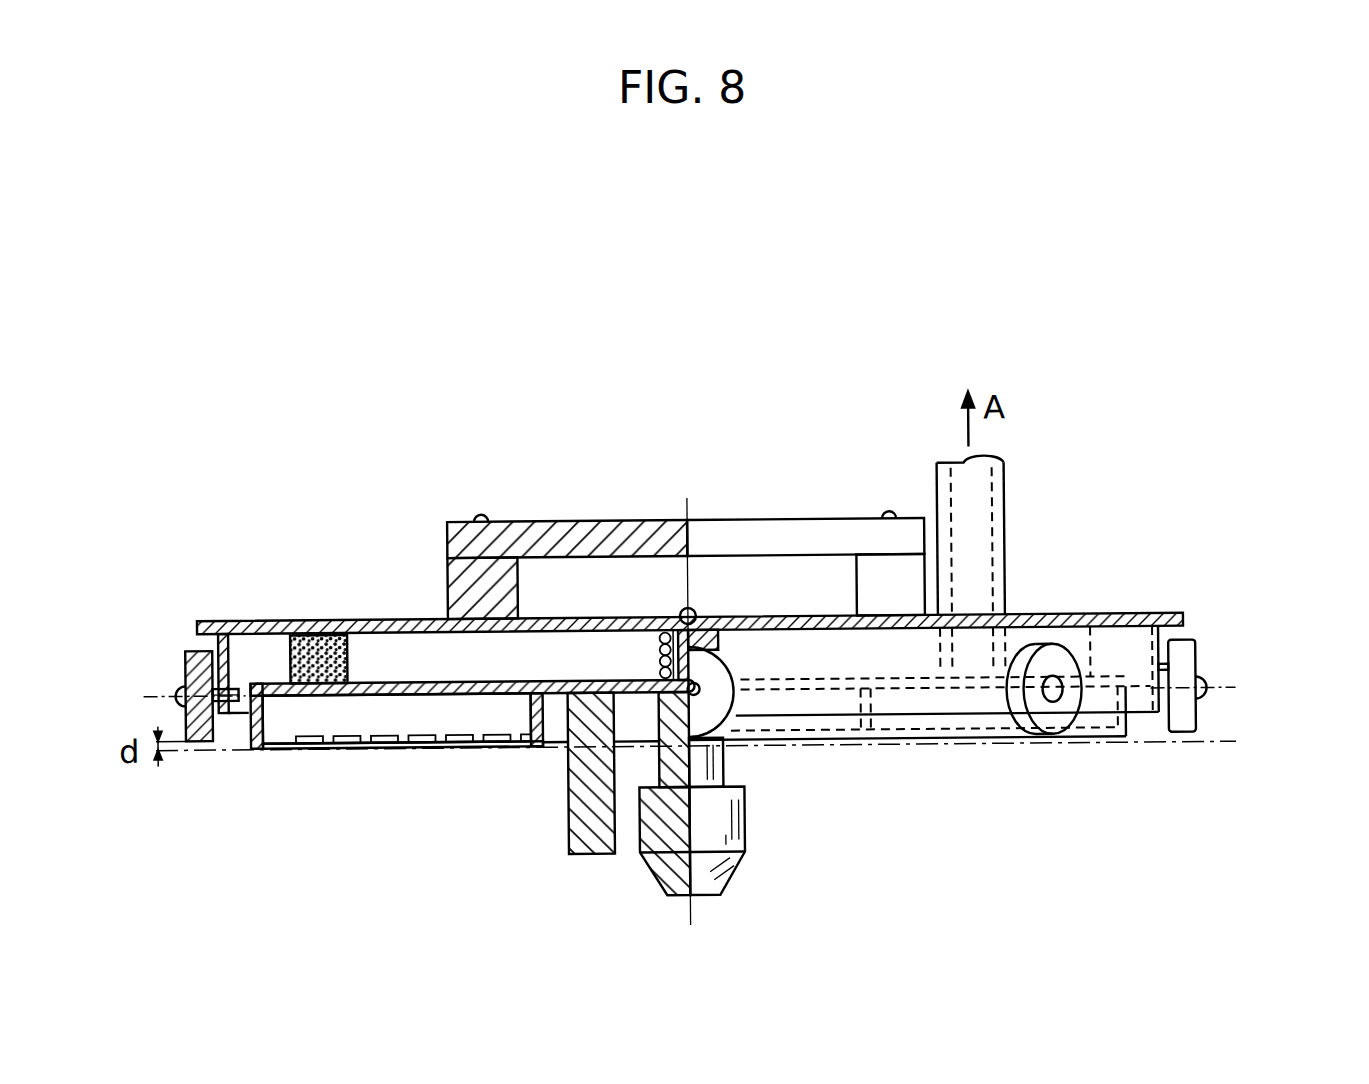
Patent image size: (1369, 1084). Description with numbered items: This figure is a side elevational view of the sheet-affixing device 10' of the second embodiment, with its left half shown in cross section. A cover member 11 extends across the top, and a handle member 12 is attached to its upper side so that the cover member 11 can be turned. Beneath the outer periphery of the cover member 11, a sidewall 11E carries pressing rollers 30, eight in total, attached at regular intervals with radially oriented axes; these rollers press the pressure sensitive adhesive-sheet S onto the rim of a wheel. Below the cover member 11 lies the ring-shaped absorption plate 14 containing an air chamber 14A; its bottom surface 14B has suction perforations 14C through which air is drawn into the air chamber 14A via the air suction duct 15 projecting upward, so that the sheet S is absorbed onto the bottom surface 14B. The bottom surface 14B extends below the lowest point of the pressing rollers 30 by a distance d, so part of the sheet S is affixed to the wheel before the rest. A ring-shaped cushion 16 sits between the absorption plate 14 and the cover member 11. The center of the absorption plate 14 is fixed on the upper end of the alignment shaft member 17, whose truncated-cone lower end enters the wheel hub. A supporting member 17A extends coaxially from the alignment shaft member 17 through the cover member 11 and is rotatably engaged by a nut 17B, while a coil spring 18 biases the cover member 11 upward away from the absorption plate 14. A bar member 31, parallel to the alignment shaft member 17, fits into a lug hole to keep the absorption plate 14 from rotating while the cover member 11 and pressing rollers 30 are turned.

The sheet-affixing device 10' is at (1180, 303).
The cover member 11 is at (1145, 610).
The sidewall 11E is at (226, 653).
The handle member 12 is at (578, 539).
The absorption plate 14 is at (426, 672).
The air chamber 14A is at (408, 712).
The bottom surface 14B is at (490, 742).
The suction perforations 14C is at (290, 744).
The air suction duct 15 is at (975, 500).
The cushion 16 is at (322, 630).
The alignment shaft member 17 is at (722, 872).
The supporting member 17A is at (657, 663).
The nut 17B is at (697, 613).
The coil spring 18 is at (712, 638).
The pressing rollers 30 is at (188, 668).
The bar member 31 is at (593, 830).
The pressure sensitive adhesive-sheet S is at (1133, 754).